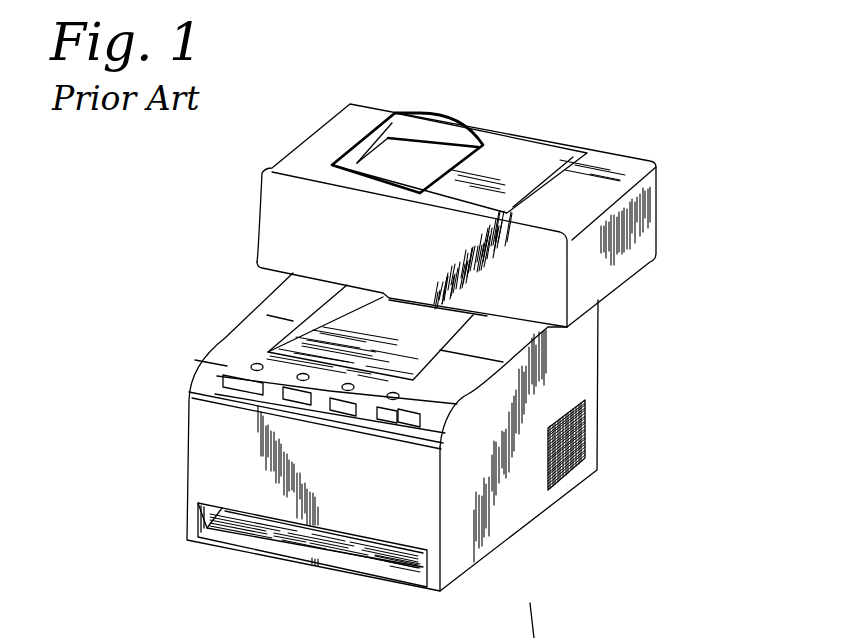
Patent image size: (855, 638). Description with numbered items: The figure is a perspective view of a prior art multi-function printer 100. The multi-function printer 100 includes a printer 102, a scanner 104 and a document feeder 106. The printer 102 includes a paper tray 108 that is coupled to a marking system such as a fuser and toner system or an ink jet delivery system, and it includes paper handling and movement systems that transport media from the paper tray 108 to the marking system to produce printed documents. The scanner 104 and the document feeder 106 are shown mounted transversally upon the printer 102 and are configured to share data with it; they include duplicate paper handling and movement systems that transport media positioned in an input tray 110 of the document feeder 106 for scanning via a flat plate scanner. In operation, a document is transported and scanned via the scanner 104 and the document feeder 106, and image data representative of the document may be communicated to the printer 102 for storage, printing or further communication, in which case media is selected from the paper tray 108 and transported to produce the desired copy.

The multi-function printer 100 is at (630, 58).
The printer 102 is at (600, 361).
The scanner 104 is at (658, 240).
The document feeder 106 is at (508, 122).
The paper tray 108 is at (268, 546).
The input tray 110 is at (433, 165).